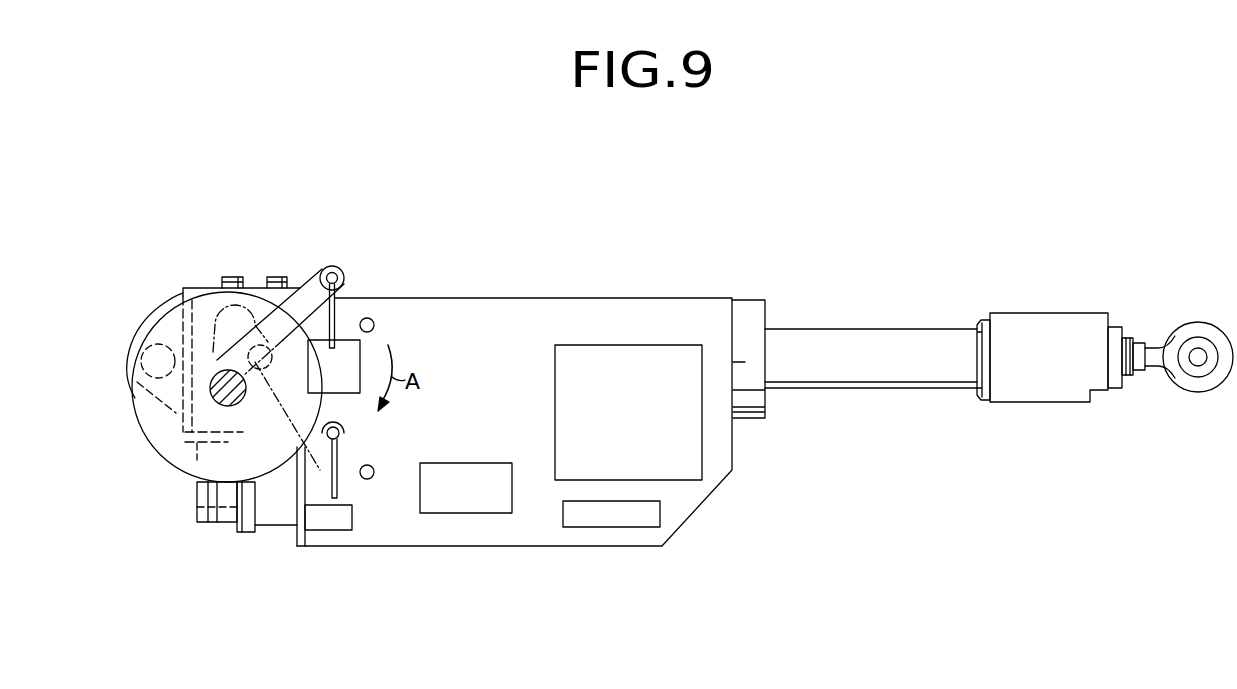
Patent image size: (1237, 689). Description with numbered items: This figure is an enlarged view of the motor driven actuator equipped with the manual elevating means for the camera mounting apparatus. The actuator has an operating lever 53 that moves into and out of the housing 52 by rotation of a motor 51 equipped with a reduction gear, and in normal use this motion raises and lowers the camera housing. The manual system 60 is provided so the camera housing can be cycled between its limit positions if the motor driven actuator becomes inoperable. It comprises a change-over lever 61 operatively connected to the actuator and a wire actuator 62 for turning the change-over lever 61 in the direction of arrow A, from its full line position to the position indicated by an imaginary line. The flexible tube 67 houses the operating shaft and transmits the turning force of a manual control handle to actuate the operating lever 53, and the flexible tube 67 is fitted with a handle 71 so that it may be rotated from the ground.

The motor 51 is at (274, 517).
The housing 52 is at (537, 297).
The operating lever 53 is at (853, 328).
The manual system 60 is at (600, 232).
The change-over lever 61 is at (332, 264).
The wire actuator 62 is at (337, 317).
The flexible tube 67 is at (240, 410).
The handle 71 is at (165, 442).